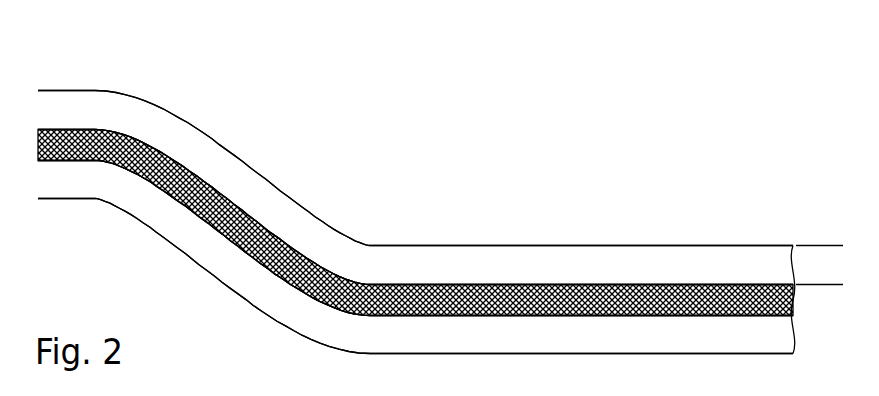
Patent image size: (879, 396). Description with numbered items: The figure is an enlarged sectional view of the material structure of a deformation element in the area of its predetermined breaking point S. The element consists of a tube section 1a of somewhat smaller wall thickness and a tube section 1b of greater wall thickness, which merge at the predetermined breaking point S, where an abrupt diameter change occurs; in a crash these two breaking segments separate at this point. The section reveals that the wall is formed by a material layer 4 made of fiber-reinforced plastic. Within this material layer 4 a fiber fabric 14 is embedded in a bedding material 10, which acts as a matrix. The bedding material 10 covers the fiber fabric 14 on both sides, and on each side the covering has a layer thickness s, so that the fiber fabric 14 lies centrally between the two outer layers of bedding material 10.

The material layer 4 is at (37, 91).
The tube section 1a is at (86, 84).
The tube section 1b is at (660, 238).
The predetermined breaking point S is at (263, 167).
The fiber fabric 14 is at (449, 285).
The bedding material 10 is at (280, 309).
The layer thickness s is at (827, 210).